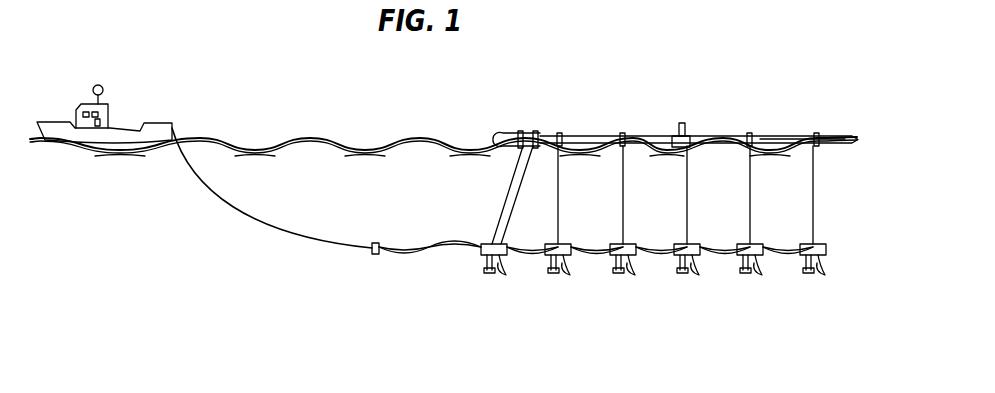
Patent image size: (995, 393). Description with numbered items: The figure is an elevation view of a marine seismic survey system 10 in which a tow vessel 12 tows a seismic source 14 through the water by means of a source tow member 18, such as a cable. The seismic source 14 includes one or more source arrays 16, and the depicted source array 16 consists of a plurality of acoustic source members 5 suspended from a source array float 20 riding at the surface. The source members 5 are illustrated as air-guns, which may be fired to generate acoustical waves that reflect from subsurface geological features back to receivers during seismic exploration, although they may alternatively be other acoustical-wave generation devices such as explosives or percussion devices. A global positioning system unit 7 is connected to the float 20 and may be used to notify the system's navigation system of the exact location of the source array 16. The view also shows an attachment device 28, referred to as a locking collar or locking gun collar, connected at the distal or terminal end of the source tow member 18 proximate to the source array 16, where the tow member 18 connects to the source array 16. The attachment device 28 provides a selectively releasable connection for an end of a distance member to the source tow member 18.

The marine seismic survey system 10 is at (231, 67).
The tow vessel 12 is at (56, 121).
The source tow member 18 is at (293, 237).
The attachment device 28 is at (376, 255).
The source array 16 is at (597, 134).
The seismic source 14 is at (737, 108).
The global positioning system unit 7 is at (681, 122).
The source array float 20 is at (781, 135).
The acoustic source members 5 is at (687, 276).